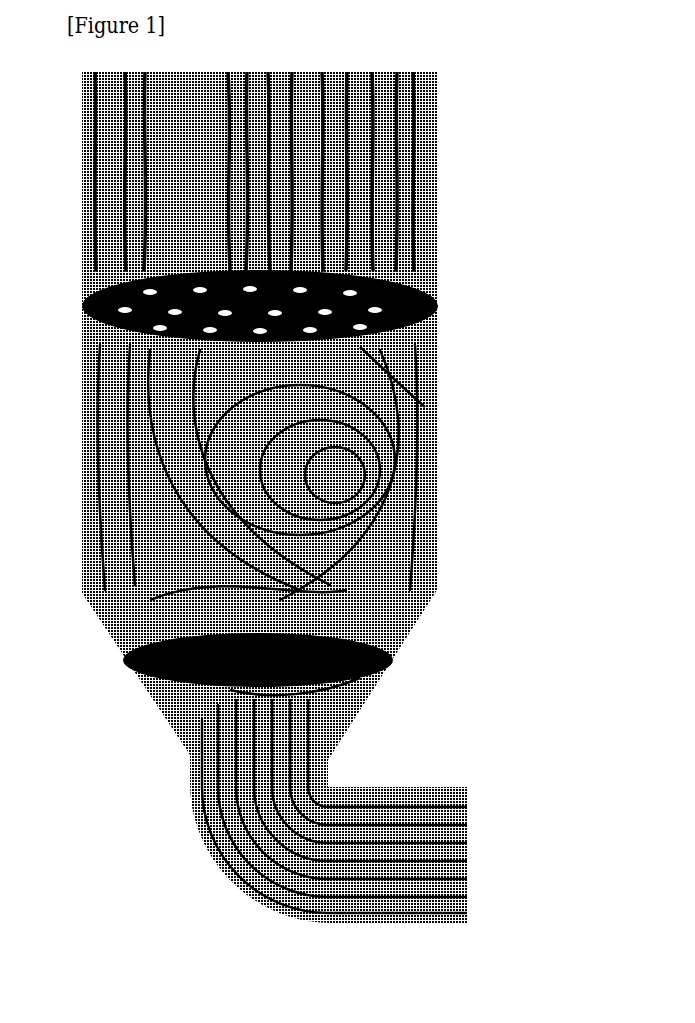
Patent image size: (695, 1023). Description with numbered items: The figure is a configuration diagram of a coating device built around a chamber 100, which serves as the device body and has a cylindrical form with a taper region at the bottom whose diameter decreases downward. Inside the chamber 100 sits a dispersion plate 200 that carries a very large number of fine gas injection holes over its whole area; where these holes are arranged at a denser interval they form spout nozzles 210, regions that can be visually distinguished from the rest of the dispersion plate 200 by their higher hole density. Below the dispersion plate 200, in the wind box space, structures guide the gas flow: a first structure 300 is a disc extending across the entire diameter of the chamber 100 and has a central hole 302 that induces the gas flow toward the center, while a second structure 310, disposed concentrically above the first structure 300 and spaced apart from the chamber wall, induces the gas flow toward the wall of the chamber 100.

The chamber 100 is at (437, 145).
The dispersion plate 200 is at (437, 302).
The spout nozzle 210 is at (425, 407).
The first structure 300 is at (393, 655).
The second structure 310 is at (347, 590).
The hole 302 is at (360, 678).